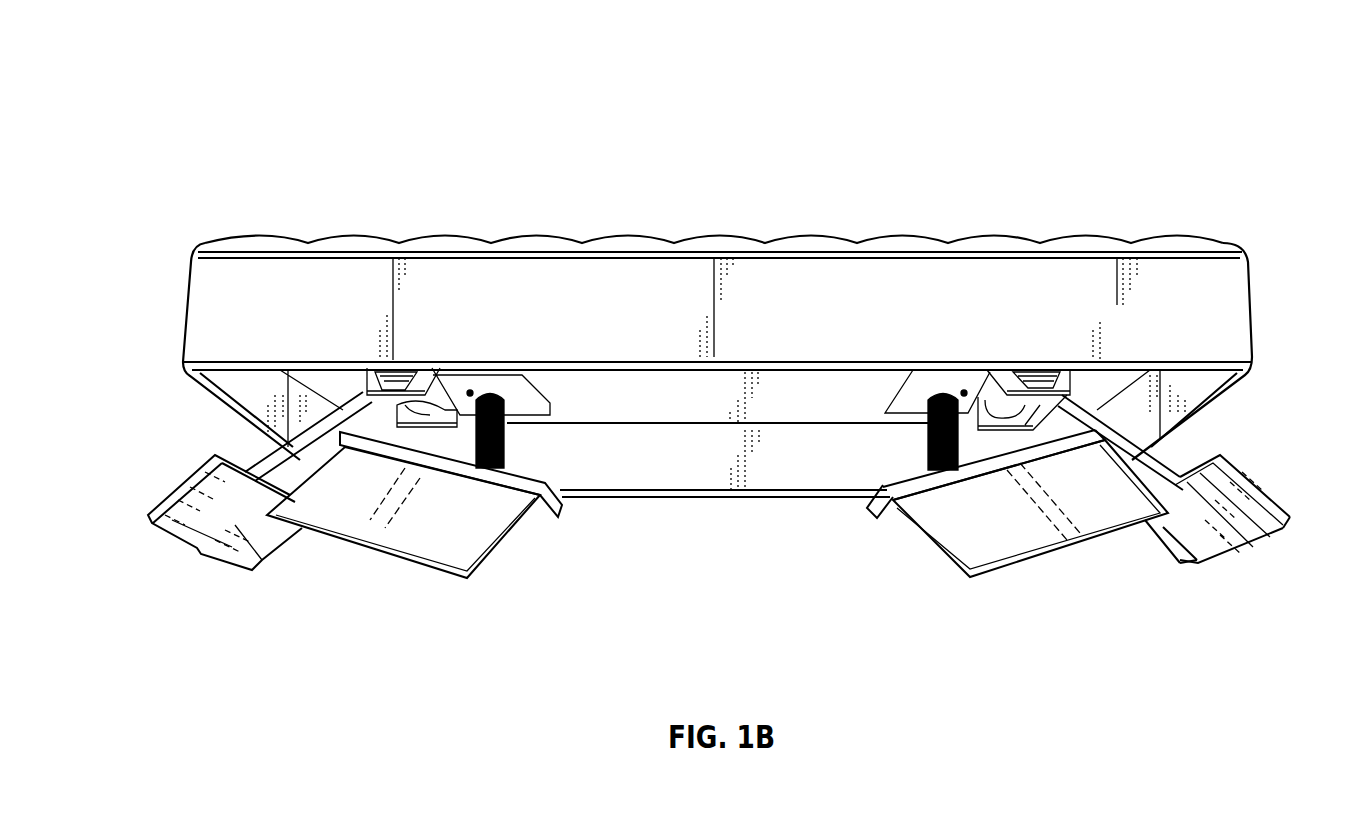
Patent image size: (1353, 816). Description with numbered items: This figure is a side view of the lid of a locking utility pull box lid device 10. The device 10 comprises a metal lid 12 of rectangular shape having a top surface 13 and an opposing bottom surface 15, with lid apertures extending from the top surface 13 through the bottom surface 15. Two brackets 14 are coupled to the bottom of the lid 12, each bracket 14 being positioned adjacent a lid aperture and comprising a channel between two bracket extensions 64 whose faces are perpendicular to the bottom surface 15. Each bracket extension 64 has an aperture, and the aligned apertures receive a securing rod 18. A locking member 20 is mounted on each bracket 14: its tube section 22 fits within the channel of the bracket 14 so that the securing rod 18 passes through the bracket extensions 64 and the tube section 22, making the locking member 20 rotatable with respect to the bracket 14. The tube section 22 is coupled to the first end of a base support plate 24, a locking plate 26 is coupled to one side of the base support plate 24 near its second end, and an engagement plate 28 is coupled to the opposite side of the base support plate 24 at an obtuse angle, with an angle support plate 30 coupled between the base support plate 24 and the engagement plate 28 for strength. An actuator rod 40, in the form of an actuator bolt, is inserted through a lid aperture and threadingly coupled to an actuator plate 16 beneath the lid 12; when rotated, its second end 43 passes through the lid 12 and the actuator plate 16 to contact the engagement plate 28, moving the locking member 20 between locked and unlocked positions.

The locking utility pull box lid device 10 is at (248, 95).
The lid 12 is at (1238, 318).
The top surface 13 is at (402, 240).
The bracket 14 is at (1080, 383).
The bottom surface 15 is at (768, 407).
The actuator plate 16 is at (945, 390).
The securing rod 18 is at (1043, 378).
The locking member 20 is at (935, 625).
The tube section 22 is at (928, 435).
The base support plate 24 is at (1197, 553).
The locking plate 26 is at (1253, 537).
The engagement plate 28 is at (890, 523).
The angle support plate 30 is at (997, 553).
The actuator rod 40 is at (922, 452).
The second end 43 is at (505, 440).
The bracket extension 64 is at (1012, 378).